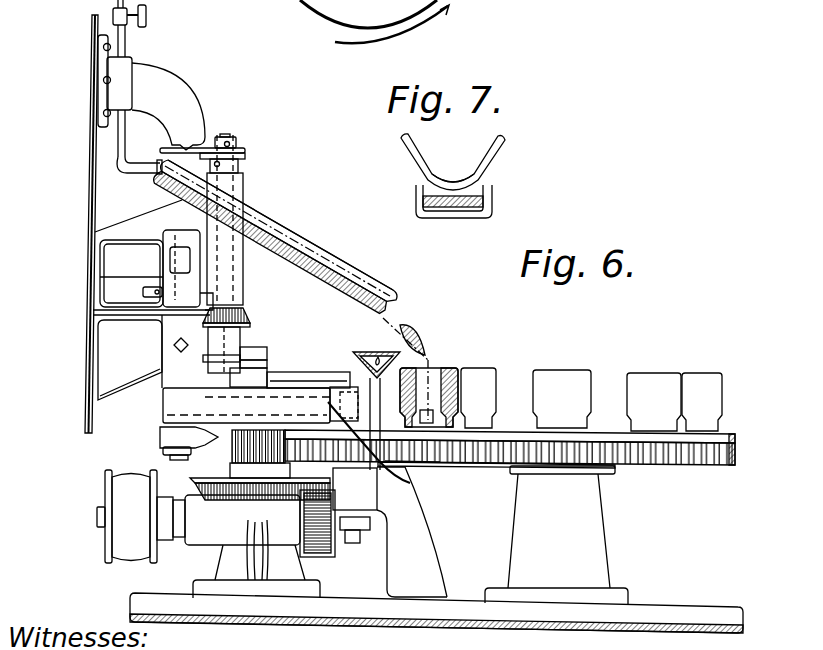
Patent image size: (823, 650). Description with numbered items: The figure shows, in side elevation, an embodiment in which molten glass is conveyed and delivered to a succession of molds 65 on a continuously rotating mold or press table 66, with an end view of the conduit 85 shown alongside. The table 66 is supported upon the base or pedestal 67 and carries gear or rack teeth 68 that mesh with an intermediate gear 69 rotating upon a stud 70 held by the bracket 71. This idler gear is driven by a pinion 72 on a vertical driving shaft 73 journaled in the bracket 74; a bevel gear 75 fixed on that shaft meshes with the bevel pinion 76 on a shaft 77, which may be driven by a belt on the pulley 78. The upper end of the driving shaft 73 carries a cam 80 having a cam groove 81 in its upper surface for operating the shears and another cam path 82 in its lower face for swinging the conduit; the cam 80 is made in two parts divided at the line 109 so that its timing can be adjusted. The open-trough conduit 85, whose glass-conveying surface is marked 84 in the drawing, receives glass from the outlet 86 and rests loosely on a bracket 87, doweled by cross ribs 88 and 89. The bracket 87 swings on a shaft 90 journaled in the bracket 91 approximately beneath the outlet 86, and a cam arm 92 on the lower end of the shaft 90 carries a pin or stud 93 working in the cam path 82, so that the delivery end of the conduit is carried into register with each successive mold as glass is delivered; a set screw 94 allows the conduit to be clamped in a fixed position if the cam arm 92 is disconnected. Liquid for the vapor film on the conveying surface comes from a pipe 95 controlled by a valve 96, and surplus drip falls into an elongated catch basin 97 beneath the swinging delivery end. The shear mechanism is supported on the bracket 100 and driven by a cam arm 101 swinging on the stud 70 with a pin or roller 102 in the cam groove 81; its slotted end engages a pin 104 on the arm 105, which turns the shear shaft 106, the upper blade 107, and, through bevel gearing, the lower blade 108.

In FIG. 6, the molds 65 is at (557, 363).
In FIG. 6, the rotating mold or press table 66 is at (732, 430).
In FIG. 6, the base or pedestal 67 is at (604, 530).
In FIG. 6, the gear or rack teeth 68 is at (703, 465).
In FIG. 6, the intermediate gear 69 is at (435, 465).
In FIG. 6, the stud 70 is at (360, 355).
In FIG. 6, the bracket 71 is at (423, 550).
In FIG. 6, the pinion 72 is at (233, 453).
In FIG. 6, the vertical driving shaft 73 is at (273, 377).
In FIG. 6, the bracket 74 is at (233, 573).
In FIG. 6, the bevel gear 75 is at (207, 492).
In FIG. 6, the bevel pinion 76 is at (320, 557).
In FIG. 6, the shaft 77 is at (97, 520).
In FIG. 6, the pulley 78 is at (133, 553).
In FIG. 6, the cam 80 is at (162, 398).
In FIG. 6, the cam groove 81 is at (310, 352).
In FIG. 6, the cam path 82 is at (282, 0).
In FIG. 6, the trough 84 is at (340, 290).
In FIG. 7, the trough 84 is at (447, 180).
In FIG. 6, the conduit 85 is at (327, 258).
In FIG. 7, the conduit 85 is at (498, 160).
In FIG. 6, the outlet 86 is at (180, 106).
In FIG. 6, the bracket 87 is at (157, 243).
In FIG. 7, the bracket 87 is at (480, 220).
In FIG. 6, the cross rib 88 is at (245, 205).
In FIG. 6, the cross rib 89 is at (392, 369).
In FIG. 7, the cross rib 89 is at (483, 203).
In FIG. 6, the shaft 90 is at (173, 460).
In FIG. 6, the bracket 91 is at (82, 224).
In FIG. 6, the cam arm 92 is at (165, 447).
In FIG. 6, the pin or stud 93 is at (160, 377).
In FIG. 6, the set screw 94 is at (174, 345).
In FIG. 6, the pipe 95 is at (128, 40).
In FIG. 6, the valve 96 is at (146, 10).
In FIG. 6, the catch basin 97 is at (395, 345).
In FIG. 6, the bracket 100 is at (100, 250).
In FIG. 6, the cam arm 101 is at (420, 367).
In FIG. 6, the pin or roller 102 is at (297, 350).
In FIG. 6, the pin 104 is at (257, 345).
In FIG. 6, the arm 105 is at (203, 362).
In FIG. 6, the shear shaft 106 is at (236, 136).
In FIG. 6, the upper blade 107 is at (207, 146).
In FIG. 6, the lower blade 108 is at (245, 157).
In FIG. 6, the line 109 is at (392, 460).